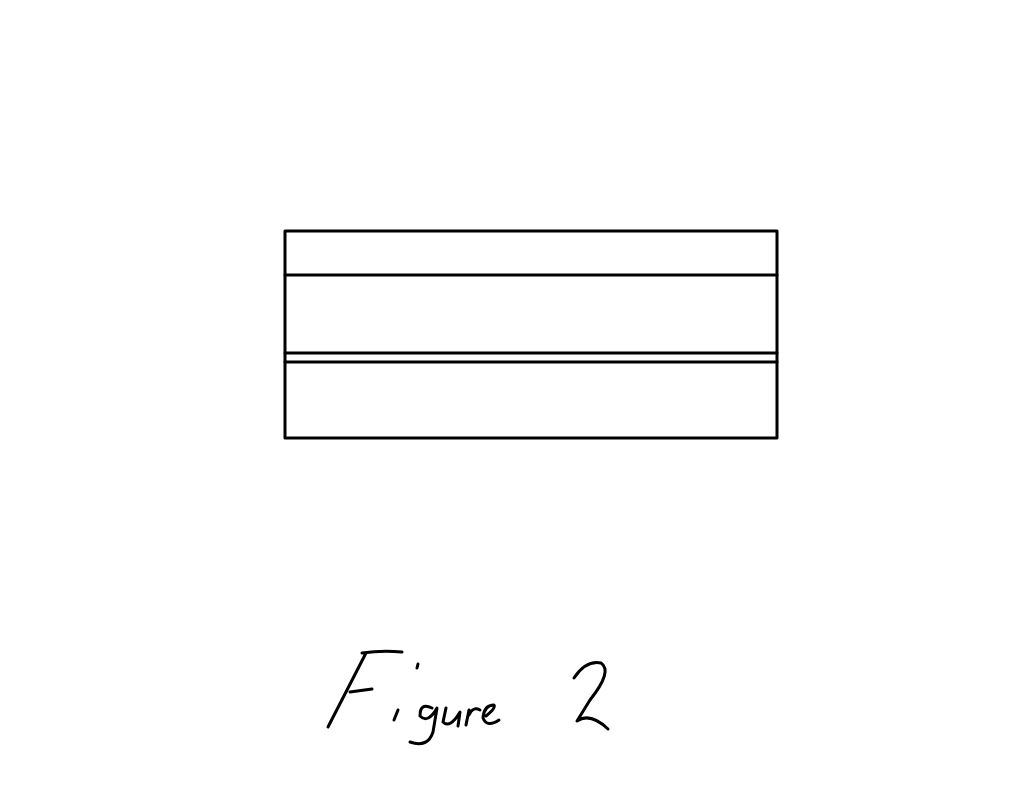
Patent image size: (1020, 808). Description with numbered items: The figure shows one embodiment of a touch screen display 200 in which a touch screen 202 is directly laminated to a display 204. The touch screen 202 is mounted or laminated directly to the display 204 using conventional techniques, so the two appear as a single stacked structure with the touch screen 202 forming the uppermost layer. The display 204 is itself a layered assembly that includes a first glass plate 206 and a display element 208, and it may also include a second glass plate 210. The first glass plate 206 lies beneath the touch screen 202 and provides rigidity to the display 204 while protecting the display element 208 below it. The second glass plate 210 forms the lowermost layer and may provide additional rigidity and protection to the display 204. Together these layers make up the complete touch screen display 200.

The touch screen display 200 is at (477, 226).
The touch screen 202 is at (599, 253).
The display 204 is at (270, 452).
The first glass plate 206 is at (596, 314).
The display element 208 is at (595, 369).
The second glass plate 210 is at (594, 400).